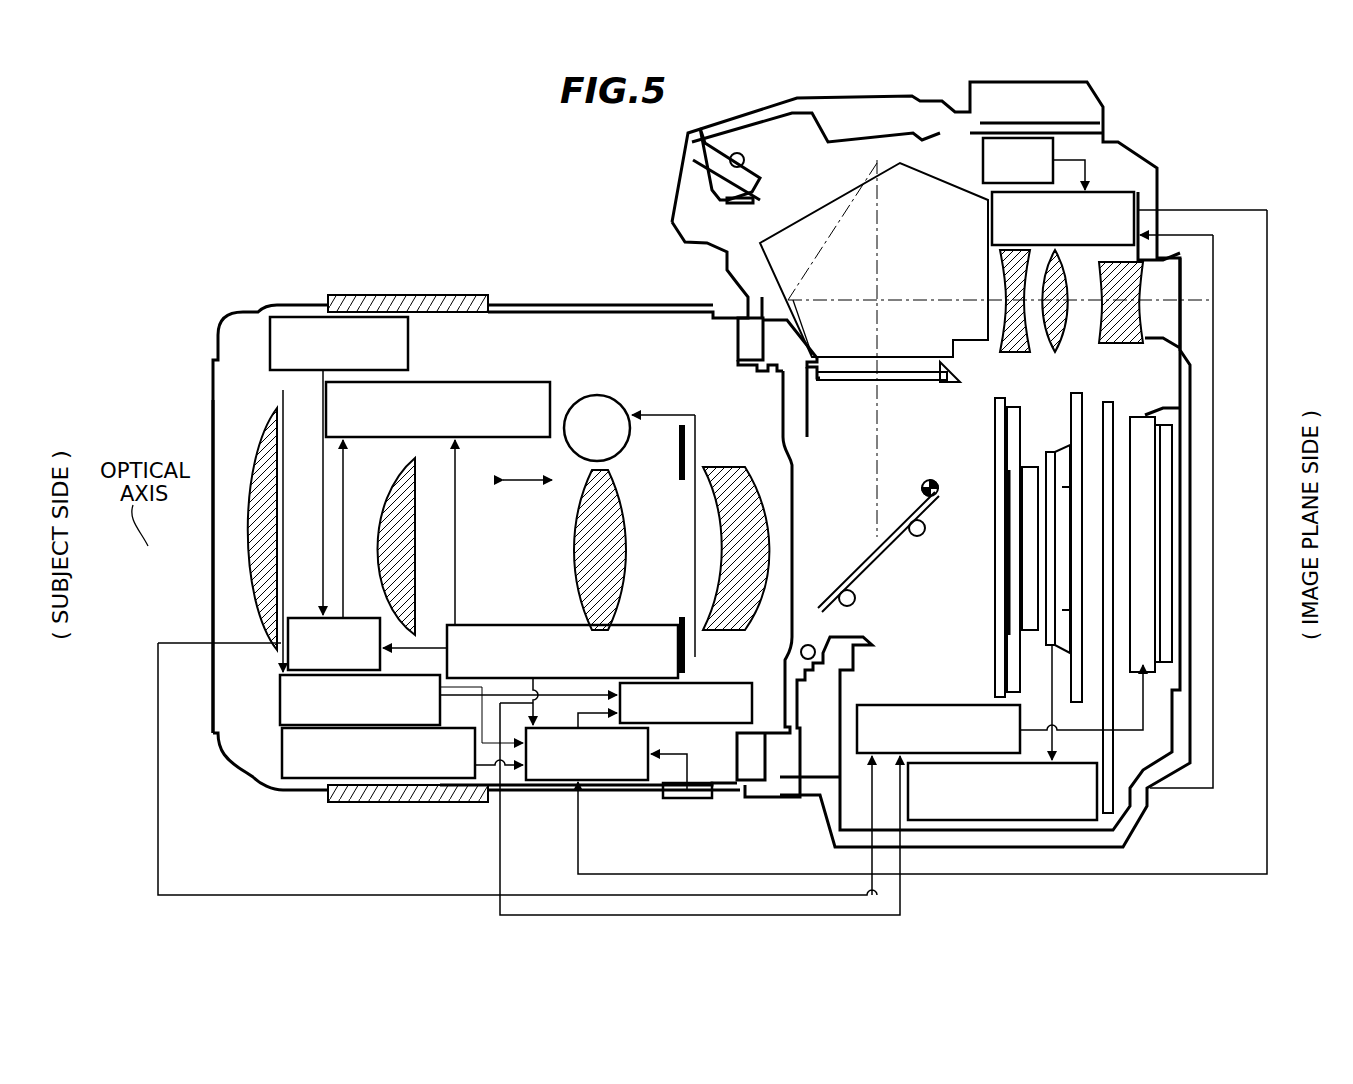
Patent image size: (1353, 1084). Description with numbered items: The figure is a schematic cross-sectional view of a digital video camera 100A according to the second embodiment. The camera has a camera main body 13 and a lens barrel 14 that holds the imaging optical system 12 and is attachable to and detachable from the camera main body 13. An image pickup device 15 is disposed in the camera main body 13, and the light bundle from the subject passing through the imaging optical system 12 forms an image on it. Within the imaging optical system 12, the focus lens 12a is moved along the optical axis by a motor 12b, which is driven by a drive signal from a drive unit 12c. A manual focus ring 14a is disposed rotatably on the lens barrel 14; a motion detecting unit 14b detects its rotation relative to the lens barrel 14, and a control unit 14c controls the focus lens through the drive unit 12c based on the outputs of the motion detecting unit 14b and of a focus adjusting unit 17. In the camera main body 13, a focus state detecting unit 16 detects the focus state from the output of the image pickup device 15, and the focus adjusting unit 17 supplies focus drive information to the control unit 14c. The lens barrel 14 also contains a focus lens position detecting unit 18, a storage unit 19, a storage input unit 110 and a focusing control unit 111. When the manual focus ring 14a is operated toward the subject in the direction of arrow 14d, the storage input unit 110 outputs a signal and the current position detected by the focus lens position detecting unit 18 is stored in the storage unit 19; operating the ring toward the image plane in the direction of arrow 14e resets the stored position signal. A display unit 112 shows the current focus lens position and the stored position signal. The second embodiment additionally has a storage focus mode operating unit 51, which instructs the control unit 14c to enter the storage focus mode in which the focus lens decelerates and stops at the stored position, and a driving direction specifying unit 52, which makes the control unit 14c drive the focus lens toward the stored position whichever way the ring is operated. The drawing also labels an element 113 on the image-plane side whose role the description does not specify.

The digital video camera 100A is at (232, 218).
The camera main body 13 is at (952, 848).
The lens barrel 14 is at (247, 775).
The manual focus ring 14a is at (415, 295).
The motion detecting unit 14b is at (260, 792).
The control unit 14c is at (553, 782).
The arrow 14d is at (332, 283).
The arrow 14e is at (488, 283).
The imaging optical system 12 is at (740, 385).
The focus lens 12a is at (578, 522).
The motor 12b is at (630, 398).
The drive unit 12c is at (762, 630).
The driving direction specifying unit 52 is at (500, 438).
The storage unit 19 is at (318, 616).
The focus lens position detecting unit 18 is at (515, 624).
The storage input unit 110 is at (270, 340).
The focusing control unit 111 is at (280, 700).
The display unit 112 is at (888, 705).
The image plane 113 is at (1165, 618).
The storage focus mode operating unit 51 is at (715, 790).
The image pickup device 15 is at (1068, 565).
The focus state detecting unit 16 is at (1045, 820).
The focus adjusting unit 17 is at (1107, 192).